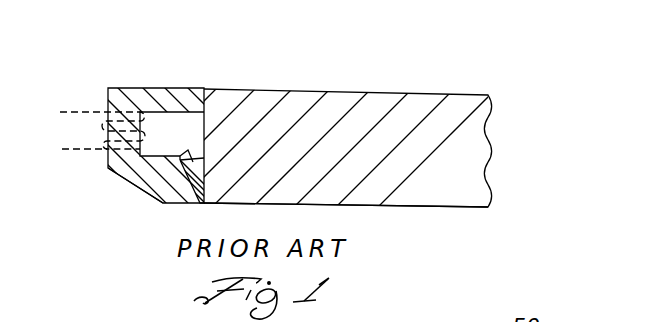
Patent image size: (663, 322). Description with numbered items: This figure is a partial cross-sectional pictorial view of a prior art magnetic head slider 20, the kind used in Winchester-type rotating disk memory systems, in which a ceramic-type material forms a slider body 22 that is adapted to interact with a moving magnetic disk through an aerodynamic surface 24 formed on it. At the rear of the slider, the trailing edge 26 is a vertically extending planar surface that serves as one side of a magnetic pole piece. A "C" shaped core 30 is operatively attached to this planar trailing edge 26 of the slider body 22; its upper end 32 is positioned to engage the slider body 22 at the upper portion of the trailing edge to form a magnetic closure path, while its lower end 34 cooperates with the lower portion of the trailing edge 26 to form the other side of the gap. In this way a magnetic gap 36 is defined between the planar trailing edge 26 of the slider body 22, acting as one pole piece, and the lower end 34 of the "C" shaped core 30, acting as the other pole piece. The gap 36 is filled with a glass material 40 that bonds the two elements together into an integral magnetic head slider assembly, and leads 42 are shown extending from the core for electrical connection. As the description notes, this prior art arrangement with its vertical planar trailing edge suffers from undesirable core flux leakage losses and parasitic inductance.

The magnetic head slider 20 is at (470, 78).
The slider body 22 is at (475, 140).
The aerodynamic surface 24 is at (425, 207).
The trailing edge 26 is at (193, 125).
The "C" shaped core 30 is at (142, 74).
The upper end 32 is at (175, 95).
The lower end 34 is at (188, 150).
The magnetic gap 36 is at (174, 205).
The glass material 40 is at (181, 157).
The leads 42 is at (87, 112).